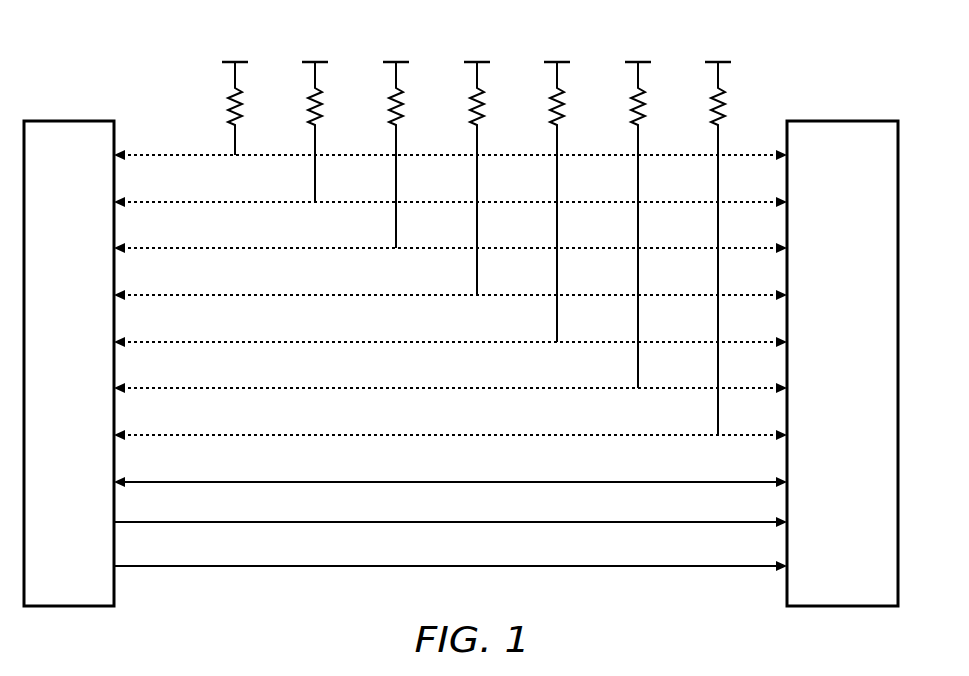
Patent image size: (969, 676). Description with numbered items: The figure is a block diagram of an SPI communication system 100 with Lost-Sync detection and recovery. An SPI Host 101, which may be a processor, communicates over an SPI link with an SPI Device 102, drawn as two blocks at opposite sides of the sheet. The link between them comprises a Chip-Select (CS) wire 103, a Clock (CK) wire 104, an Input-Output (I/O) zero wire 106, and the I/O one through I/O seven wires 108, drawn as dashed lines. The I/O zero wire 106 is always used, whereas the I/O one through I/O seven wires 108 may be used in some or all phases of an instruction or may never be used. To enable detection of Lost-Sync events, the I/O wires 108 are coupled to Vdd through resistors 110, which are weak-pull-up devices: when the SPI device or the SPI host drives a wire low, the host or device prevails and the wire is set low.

The SPI communication system 100 is at (120, 73).
The SPI Host 101 is at (52, 597).
The SPI Device 102 is at (821, 597).
The Chip-Select (CS) wire 103 is at (370, 565).
The Clock (CK) wire 104 is at (370, 521).
The Input-Output (I/O) 0 wire 106 is at (370, 481).
The I/O1 through I/O7 wires 108 is at (293, 158).
The resistors 110 is at (460, 234).